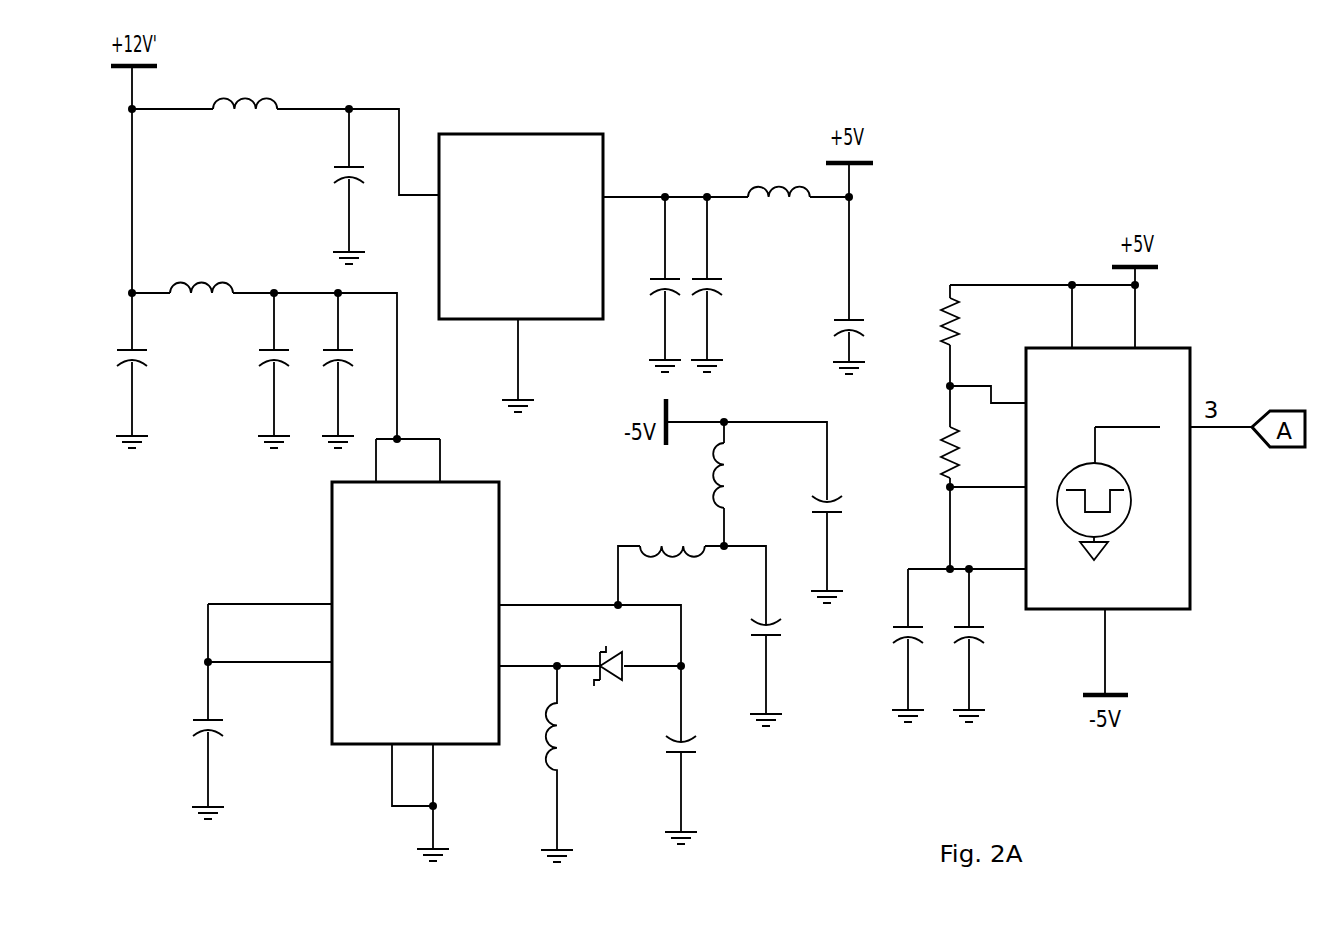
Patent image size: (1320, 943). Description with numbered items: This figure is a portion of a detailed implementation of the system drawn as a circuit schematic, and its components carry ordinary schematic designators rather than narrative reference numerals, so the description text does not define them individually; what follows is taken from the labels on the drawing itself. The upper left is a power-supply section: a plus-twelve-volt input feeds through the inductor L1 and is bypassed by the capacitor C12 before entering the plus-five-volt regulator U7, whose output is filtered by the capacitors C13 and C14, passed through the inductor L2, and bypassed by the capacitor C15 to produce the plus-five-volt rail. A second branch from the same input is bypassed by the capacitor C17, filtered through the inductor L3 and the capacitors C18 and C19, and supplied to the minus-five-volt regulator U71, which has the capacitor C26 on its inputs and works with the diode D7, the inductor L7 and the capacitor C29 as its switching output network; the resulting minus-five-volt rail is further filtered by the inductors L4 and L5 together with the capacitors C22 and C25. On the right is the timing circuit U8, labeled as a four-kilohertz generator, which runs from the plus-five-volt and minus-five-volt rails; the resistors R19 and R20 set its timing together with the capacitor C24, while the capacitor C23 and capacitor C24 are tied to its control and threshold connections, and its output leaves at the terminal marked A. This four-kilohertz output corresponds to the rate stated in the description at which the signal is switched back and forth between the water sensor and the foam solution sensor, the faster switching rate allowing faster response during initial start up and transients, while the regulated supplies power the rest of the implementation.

The inductor 100uH L1 is at (245, 103).
The capacitor .1 uF C12 is at (322, 186).
The +5V regulator LM7805 U7 is at (521, 273).
The capacitor .1 uF C13 is at (643, 284).
The capacitor 100 uF C14 is at (740, 284).
The inductor 100uH L2 is at (779, 192).
The capacitor 100uF C15 is at (870, 320).
The capacitor .1 uF C17 is at (98, 370).
The inductor 100uH L3 is at (201, 318).
The capacitor 100uF C18 is at (251, 370).
The capacitor .1 uF C19 is at (355, 370).
The -5V regulator MAX764 U71 is at (417, 655).
The capacitor .1uF C26 is at (186, 758).
The diode 1N5817 D7 is at (615, 664).
The inductor 47uH L7 is at (559, 764).
The capacitor 100uF C29 is at (706, 790).
The inductor 100uH L4 is at (687, 475).
The inductor 100uH L5 is at (672, 553).
The capacitor 100uF C22 is at (797, 537).
The capacitor 100uF C25 is at (790, 672).
The 4kHz generator ICM7555 U8 is at (1095, 477).
The resistor 39K R19 is at (972, 324).
The resistor 68K R20 is at (931, 455).
The capacitor 1000pF C23 is at (889, 674).
The capacitor 1000pF C24 is at (991, 674).